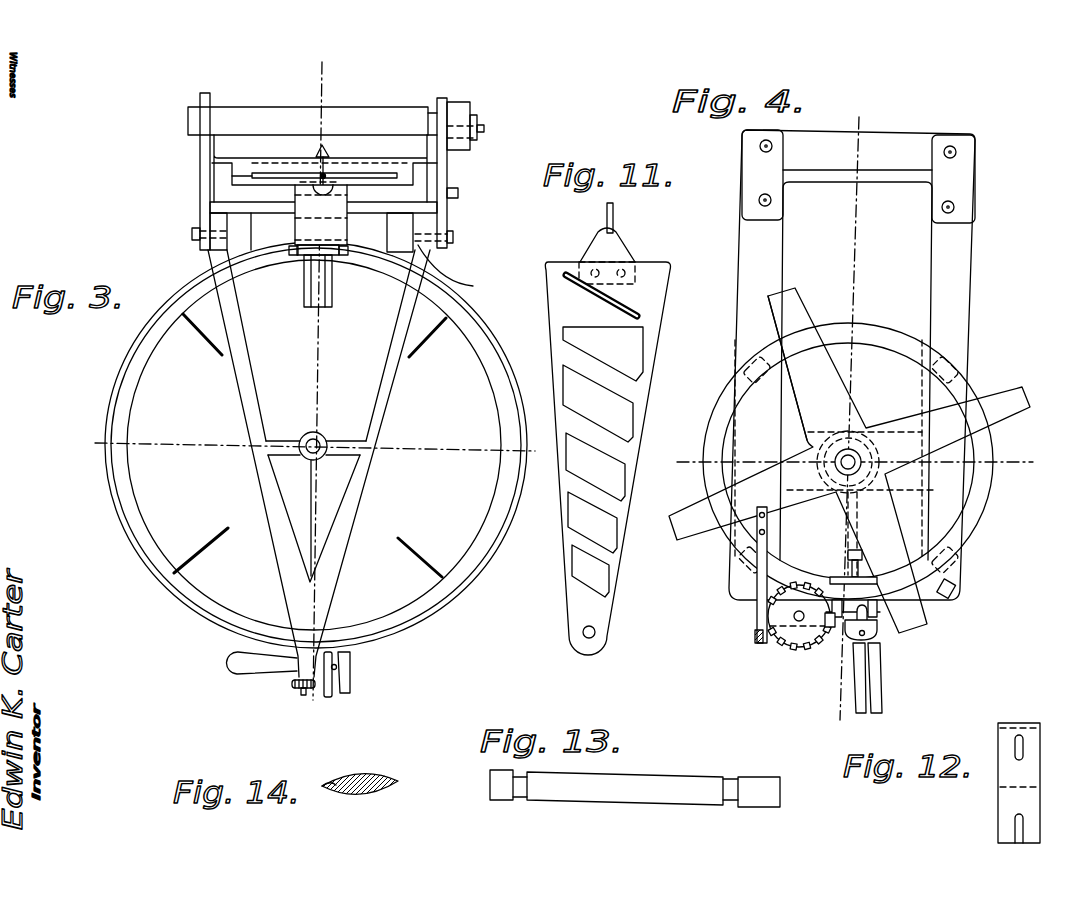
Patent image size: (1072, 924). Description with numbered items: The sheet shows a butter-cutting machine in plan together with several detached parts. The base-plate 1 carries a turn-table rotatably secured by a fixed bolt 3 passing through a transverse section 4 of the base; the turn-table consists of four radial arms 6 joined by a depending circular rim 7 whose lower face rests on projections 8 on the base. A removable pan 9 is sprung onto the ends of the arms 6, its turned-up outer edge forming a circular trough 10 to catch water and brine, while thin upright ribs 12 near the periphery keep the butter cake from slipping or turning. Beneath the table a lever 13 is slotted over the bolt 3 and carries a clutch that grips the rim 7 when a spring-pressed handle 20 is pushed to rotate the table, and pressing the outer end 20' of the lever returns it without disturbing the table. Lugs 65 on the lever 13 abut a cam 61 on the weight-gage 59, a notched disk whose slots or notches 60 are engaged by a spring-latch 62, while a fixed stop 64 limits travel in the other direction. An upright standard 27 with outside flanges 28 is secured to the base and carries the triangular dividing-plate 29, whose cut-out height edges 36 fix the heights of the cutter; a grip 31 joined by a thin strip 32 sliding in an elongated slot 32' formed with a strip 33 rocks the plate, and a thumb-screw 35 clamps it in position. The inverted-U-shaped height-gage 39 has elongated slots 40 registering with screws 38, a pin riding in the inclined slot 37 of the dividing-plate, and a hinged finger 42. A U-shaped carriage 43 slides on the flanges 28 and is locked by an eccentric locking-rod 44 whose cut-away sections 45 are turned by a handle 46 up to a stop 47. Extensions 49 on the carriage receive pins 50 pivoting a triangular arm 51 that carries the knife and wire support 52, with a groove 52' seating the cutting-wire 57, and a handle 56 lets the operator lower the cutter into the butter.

In FIG. 3, the base-plate 1 is at (330, 98).
In FIG. 4, the base-plate 1 is at (972, 295).
In FIG. 4, the fixed bolt 3 is at (855, 450).
In FIG. 4, the transverse section 4 is at (789, 441).
In FIG. 4, the radial arms 6 is at (1019, 410).
In FIG. 4, the circular rim 7 is at (988, 492).
In FIG. 4, the projections 8 is at (748, 368).
In FIG. 3, the removable pan 9 is at (314, 445).
In FIG. 3, the circular trough 10 is at (470, 565).
In FIG. 3, the upright ribs 12 is at (211, 347).
In FIG. 4, the lever 13 is at (840, 543).
In FIG. 3, the spring-pressed handle 20 is at (364, 686).
In FIG. 4, the spring-pressed handle 20 is at (855, 680).
In FIG. 3, the outer end of the lever 20' is at (372, 672).
In FIG. 4, the outer end of the lever 20' is at (906, 683).
In FIG. 3, the frame or standard 27 is at (249, 160).
In FIG. 3, the outside flanges 28 is at (213, 170).
In FIG. 11, the dividing-plate 29 is at (633, 447).
In FIG. 3, the grip or handle 31 is at (328, 176).
In FIG. 11, the grip or handle 31 is at (615, 217).
In FIG. 3, the strip of metal 32 is at (458, 273).
In FIG. 11, the strip of metal 32 is at (625, 256).
In FIG. 3, the elongated slot 32' is at (306, 126).
In FIG. 3, the strip 33 is at (240, 178).
In FIG. 3, the thumb-screw 35 is at (324, 148).
In FIG. 11, the height edges 36 is at (590, 352).
In FIG. 11, the inclined slot 37 is at (631, 306).
In FIG. 3, the screws 38 is at (347, 212).
In FIG. 3, the height-gage 39 is at (304, 262).
In FIG. 12, the height-gage 39 is at (998, 797).
In FIG. 12, the elongated slot 40 is at (1015, 745).
In FIG. 3, the finger 42 is at (333, 297).
In FIG. 3, the carriage 43 is at (202, 192).
In FIG. 3, the locking-rod 44 is at (362, 118).
In FIG. 13, the locking-rod 44 is at (655, 778).
In FIG. 3, the cut-away section 45 is at (214, 112).
In FIG. 13, the cut-away section 45 is at (748, 777).
In FIG. 3, the handle 46 is at (470, 146).
In FIG. 3, the stop 47 is at (459, 194).
In FIG. 3, the extension 49 is at (197, 220).
In FIG. 3, the pins 50 is at (200, 240).
In FIG. 3, the triangular-shaped arm 51 is at (250, 395).
In FIG. 3, the knife and wire supporting means 52 is at (327, 422).
In FIG. 14, the knife and wire supporting means 52 is at (362, 771).
In FIG. 14, the groove 52' is at (341, 759).
In FIG. 3, the handle 56 is at (258, 667).
In FIG. 3, the cutting-wire 57 is at (308, 510).
In FIG. 4, the weight-gage 59 is at (816, 643).
In FIG. 4, the slots or notches 60 is at (801, 651).
In FIG. 4, the cam 61 is at (765, 614).
In FIG. 4, the spring-latch 62 is at (755, 626).
In FIG. 4, the fixed stop 64 is at (958, 598).
In FIG. 4, the extensions or lugs 65 is at (832, 628).